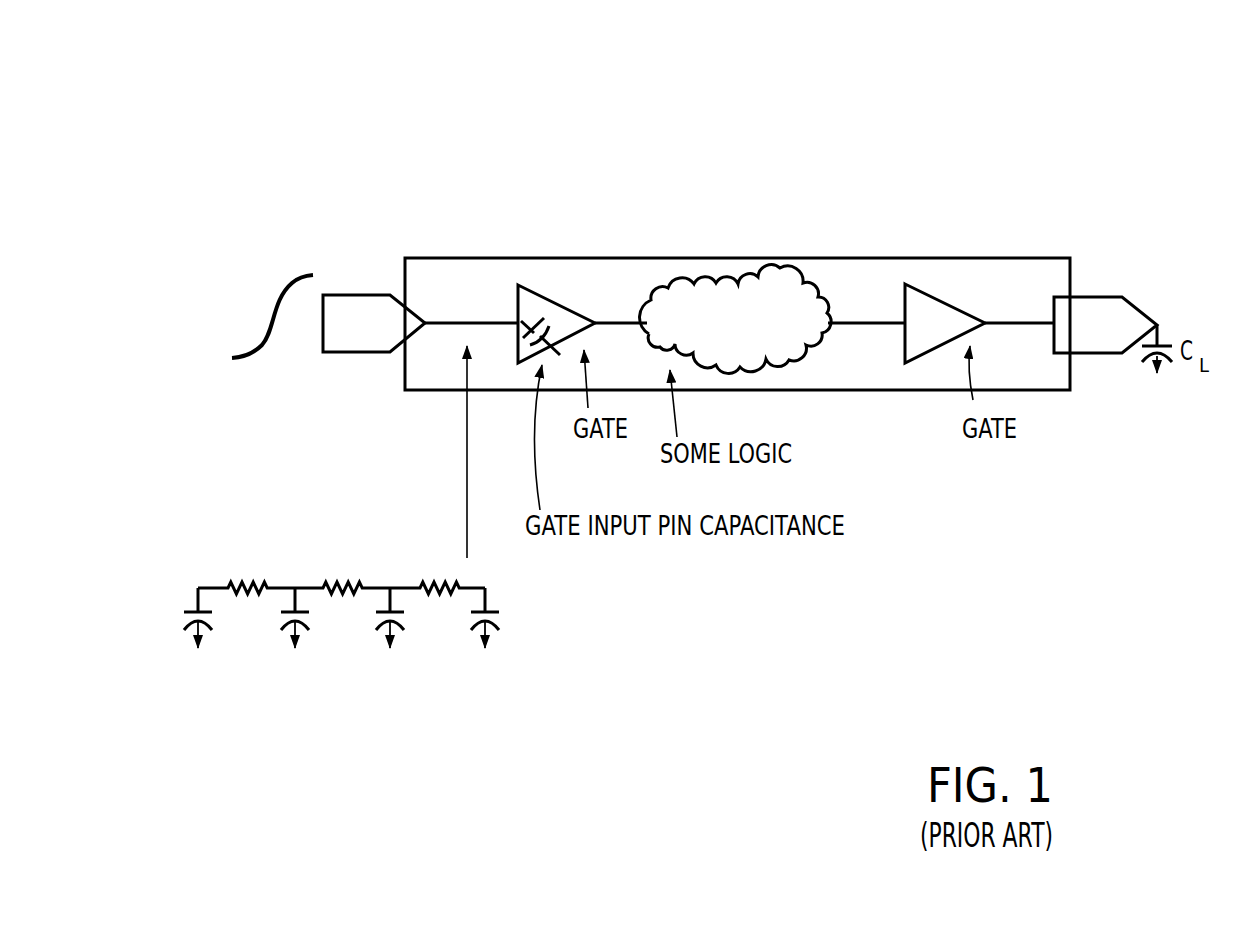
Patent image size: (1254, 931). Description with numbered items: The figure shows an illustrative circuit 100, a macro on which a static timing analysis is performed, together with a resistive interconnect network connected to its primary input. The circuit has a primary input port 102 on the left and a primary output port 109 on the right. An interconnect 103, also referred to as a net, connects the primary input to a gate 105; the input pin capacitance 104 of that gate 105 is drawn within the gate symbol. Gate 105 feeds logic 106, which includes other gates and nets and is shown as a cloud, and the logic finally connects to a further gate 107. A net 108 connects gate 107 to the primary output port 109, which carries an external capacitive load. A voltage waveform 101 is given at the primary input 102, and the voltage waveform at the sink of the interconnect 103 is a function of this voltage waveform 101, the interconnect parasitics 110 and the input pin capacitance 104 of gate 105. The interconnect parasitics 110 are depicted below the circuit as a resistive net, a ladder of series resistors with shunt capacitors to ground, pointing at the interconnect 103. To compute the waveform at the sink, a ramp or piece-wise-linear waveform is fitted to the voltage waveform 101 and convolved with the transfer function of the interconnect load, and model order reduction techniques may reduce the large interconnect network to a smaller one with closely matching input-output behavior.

The illustrative circuit 100 is at (894, 175).
The voltage waveform 101 is at (288, 283).
The primary input port 102 is at (350, 300).
The interconnect 103 is at (450, 323).
The input pin capacitance 104 is at (533, 300).
The gate 105 is at (575, 306).
The logic 106 is at (748, 290).
The gate 107 is at (922, 303).
The net 108 is at (1018, 322).
The primary output port 109 is at (1080, 297).
The interconnect parasitics 110 is at (200, 587).